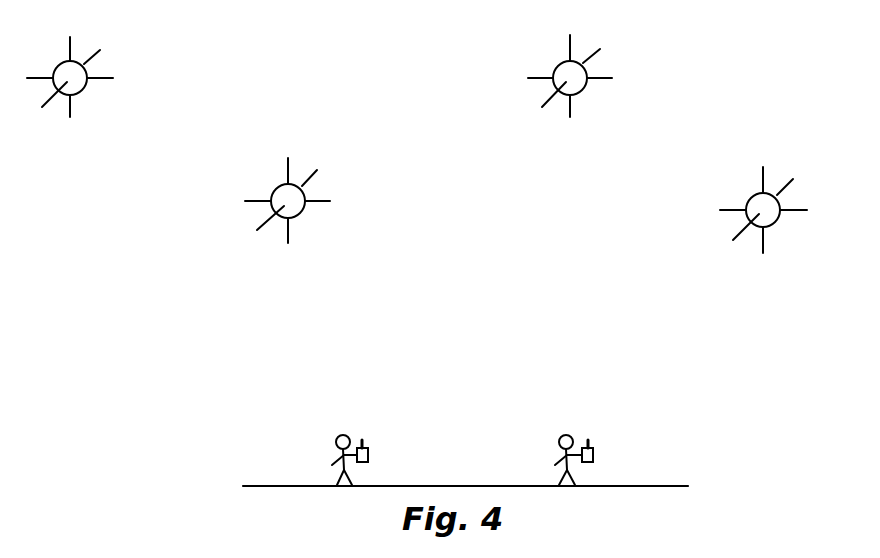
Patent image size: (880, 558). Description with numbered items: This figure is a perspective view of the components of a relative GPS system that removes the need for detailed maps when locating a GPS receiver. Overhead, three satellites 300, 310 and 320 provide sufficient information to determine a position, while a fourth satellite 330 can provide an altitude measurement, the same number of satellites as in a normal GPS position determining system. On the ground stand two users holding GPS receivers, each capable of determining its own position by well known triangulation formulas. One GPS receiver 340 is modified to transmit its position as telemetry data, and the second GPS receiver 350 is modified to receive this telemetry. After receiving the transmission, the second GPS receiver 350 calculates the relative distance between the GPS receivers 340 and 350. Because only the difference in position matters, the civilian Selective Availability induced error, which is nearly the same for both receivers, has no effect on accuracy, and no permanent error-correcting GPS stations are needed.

The satellite 300 is at (70, 50).
The satellite 310 is at (288, 172).
The satellite 320 is at (570, 43).
The fourth satellite 330 is at (763, 177).
The GPS receiver 340 is at (368, 457).
The second GPS receiver 350 is at (593, 457).